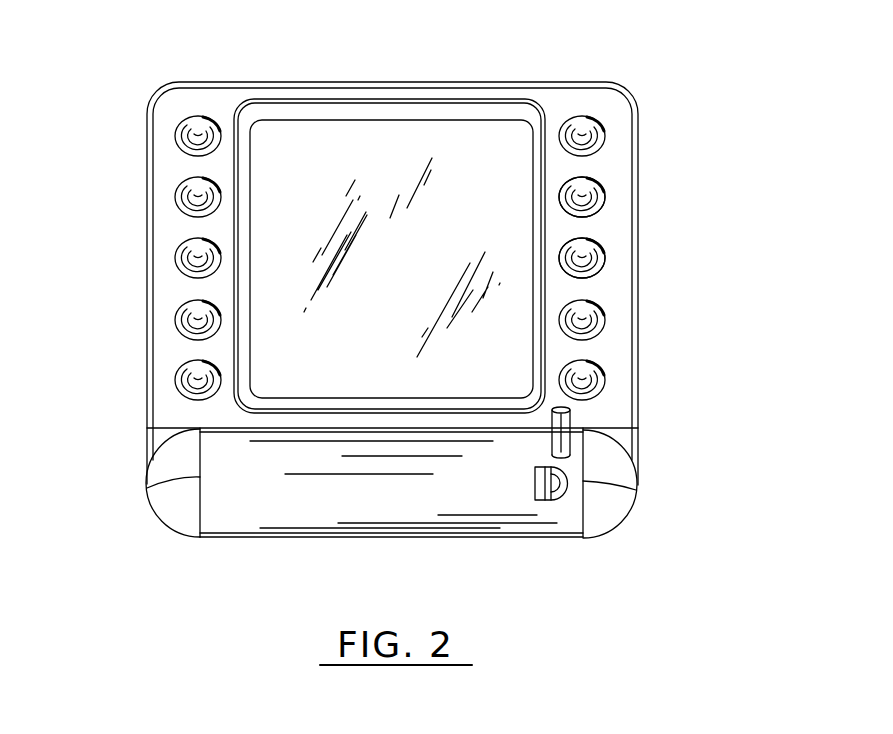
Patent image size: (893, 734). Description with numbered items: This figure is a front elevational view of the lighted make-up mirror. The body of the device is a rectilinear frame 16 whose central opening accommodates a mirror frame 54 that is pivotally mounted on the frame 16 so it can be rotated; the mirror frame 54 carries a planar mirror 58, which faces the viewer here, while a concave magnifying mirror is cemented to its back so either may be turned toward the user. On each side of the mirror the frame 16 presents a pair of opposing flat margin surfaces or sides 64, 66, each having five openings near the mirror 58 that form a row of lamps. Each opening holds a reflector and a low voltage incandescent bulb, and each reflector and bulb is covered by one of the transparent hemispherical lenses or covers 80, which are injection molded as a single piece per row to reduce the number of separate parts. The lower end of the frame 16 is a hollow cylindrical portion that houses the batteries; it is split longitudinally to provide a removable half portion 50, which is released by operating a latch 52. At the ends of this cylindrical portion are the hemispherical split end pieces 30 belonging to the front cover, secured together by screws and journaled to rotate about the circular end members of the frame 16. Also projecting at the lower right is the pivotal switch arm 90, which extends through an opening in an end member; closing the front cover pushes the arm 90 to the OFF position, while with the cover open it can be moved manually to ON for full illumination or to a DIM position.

The frame 16 is at (600, 108).
The hemispherical split spaced end pieces 30 is at (165, 507).
The removable half portion 50 is at (475, 522).
The latch 52 is at (557, 500).
The mirror frame 54 is at (467, 112).
The planar mirror 58 is at (325, 145).
The margin flat surface or side 64 is at (177, 286).
The margin flat surface or side 66 is at (600, 297).
The transparent hemispherical lenses or covers 80 is at (600, 261).
The switch arm 90 is at (570, 418).